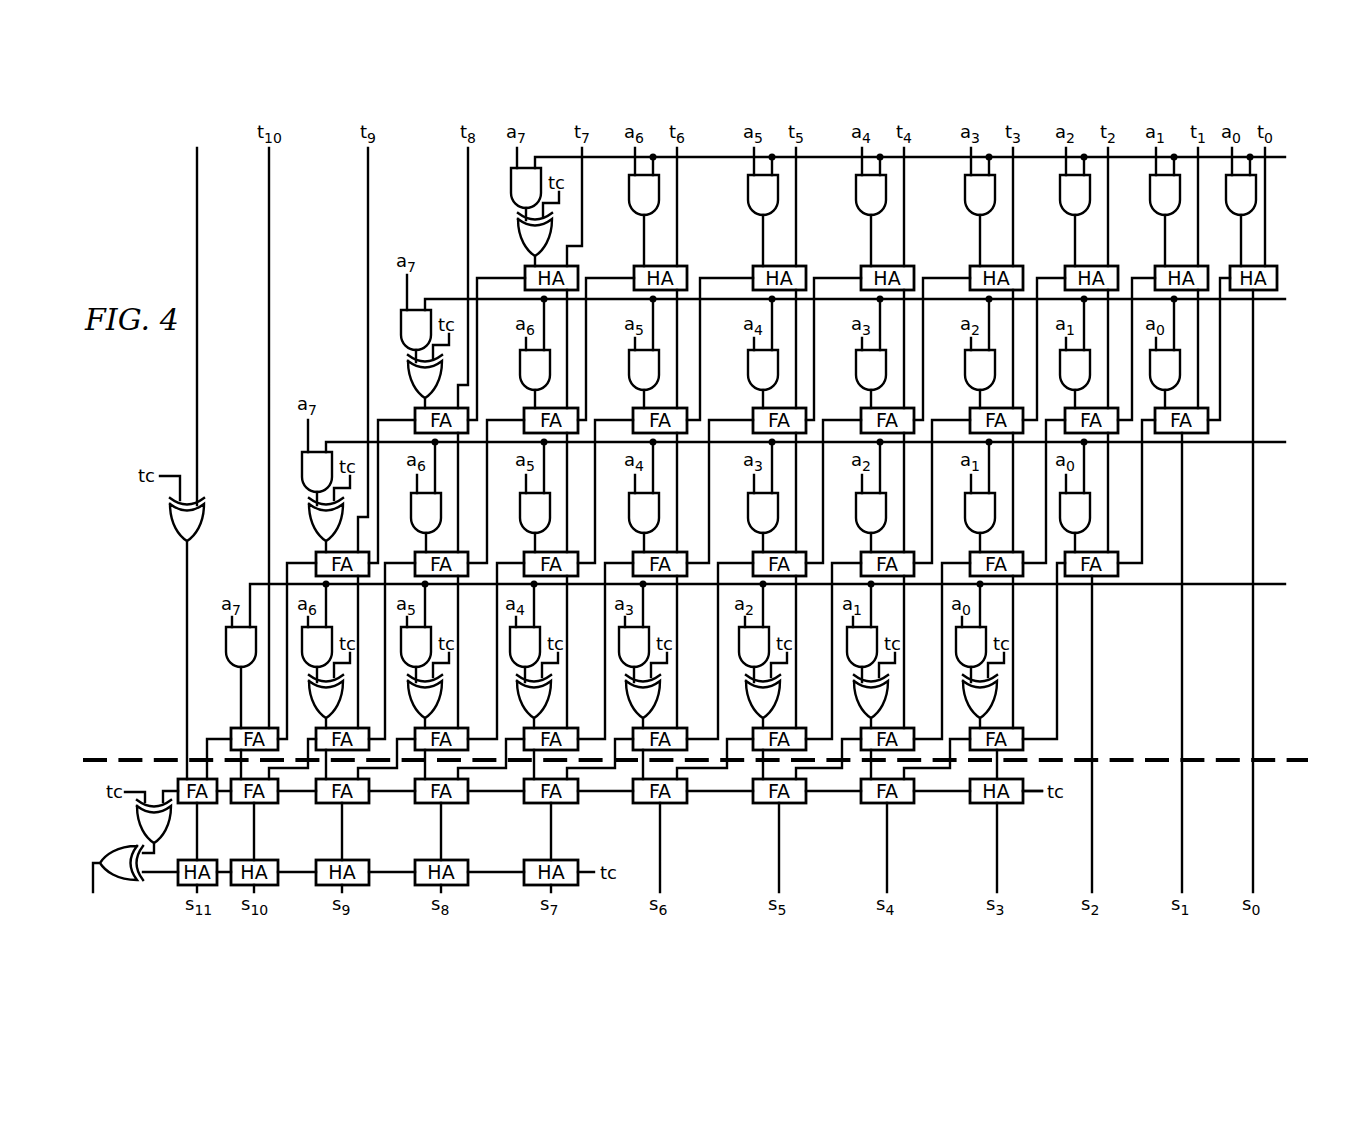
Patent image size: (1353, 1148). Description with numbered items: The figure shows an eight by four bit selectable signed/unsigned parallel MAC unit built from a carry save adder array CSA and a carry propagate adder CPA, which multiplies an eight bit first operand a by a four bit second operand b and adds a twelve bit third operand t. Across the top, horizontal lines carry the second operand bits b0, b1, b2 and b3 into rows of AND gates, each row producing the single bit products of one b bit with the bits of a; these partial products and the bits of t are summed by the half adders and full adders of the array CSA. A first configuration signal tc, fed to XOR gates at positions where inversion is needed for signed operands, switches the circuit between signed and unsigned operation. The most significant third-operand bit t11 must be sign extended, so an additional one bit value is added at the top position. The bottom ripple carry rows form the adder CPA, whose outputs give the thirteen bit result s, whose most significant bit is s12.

The least significant bit of second operand b b0 is at (922, 158).
The bit one of second operand b b1 is at (867, 300).
The bit two of second operand b b2 is at (818, 443).
The most significant bit of second operand b b3 is at (780, 600).
The most significant bit of third operand t t11 is at (185, 450).
The most significant bit of output signal s s12 is at (124, 855).
The carry save adder array CSA is at (695, 747).
The carry propagate adder CPA is at (1163, 776).